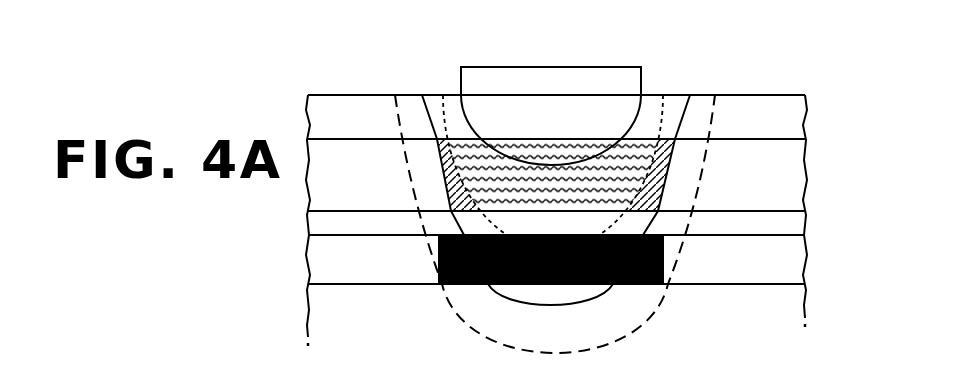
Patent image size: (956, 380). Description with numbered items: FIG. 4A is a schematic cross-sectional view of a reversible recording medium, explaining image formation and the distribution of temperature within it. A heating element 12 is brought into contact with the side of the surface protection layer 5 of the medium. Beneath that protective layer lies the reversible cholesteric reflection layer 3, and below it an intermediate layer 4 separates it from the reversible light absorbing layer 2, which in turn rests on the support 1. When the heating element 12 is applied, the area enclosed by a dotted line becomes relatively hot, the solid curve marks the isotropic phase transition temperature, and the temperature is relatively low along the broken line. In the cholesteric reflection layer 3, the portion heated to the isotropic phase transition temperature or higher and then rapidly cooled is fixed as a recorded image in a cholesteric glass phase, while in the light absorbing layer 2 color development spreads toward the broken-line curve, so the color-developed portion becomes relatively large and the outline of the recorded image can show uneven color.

The heating element 12 is at (620, 67).
The surface protection layer 5 is at (780, 120).
The reversible cholesteric reflection layer 3 is at (777, 178).
The intermediate layer 4 is at (788, 223).
The reversible light absorbing layer 2 is at (778, 270).
The support 1 is at (785, 310).